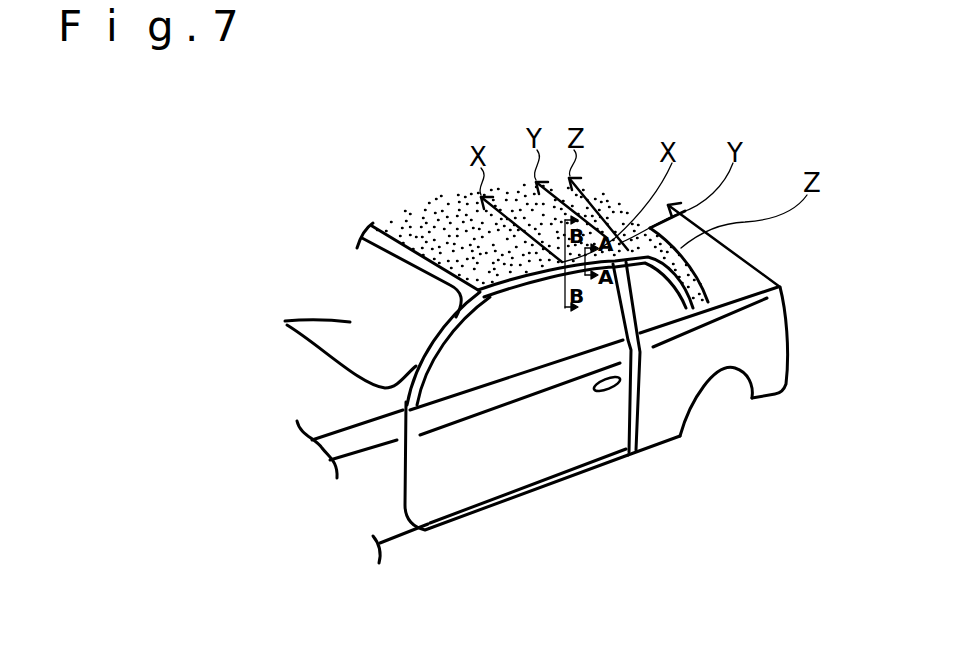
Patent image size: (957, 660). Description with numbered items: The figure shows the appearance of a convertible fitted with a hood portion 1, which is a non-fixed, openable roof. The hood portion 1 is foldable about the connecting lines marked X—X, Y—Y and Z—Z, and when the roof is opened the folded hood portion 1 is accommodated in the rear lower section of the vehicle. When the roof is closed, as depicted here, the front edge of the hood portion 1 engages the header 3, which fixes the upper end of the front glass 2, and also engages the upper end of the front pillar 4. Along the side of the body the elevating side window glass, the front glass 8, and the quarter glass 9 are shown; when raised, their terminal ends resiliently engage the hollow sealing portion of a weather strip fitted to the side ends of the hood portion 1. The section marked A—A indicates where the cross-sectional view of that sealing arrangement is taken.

The hood portion 1 is at (420, 198).
The front glass 2 is at (287, 323).
The header 3 is at (400, 258).
The front pillar 4 is at (417, 365).
The front glass 8 is at (512, 367).
The quarter glass 9 is at (665, 312).